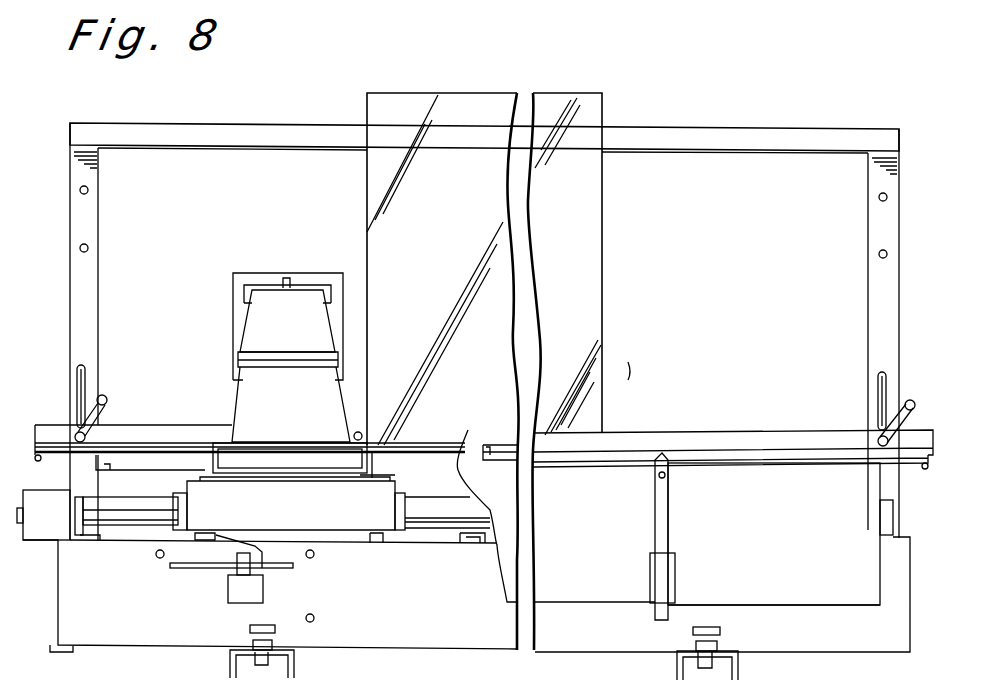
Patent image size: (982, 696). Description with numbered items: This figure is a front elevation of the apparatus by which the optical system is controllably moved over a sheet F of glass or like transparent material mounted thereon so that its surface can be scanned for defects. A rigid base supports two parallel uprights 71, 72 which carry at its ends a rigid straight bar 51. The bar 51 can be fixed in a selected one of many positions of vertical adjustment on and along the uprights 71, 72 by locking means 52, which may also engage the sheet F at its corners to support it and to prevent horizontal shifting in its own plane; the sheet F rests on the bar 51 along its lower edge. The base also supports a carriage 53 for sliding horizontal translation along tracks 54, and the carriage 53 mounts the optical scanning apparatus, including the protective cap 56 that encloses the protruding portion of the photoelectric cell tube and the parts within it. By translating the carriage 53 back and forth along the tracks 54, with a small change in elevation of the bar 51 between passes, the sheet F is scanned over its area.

The upright 71 is at (92, 216).
The upright 72 is at (882, 288).
The sheet F is at (556, 102).
The protective cap 56 is at (253, 327).
The rigid straight bar 51 is at (160, 433).
The locking means 52 is at (92, 412).
The carriage 53 is at (240, 480).
The track 54 is at (118, 508).